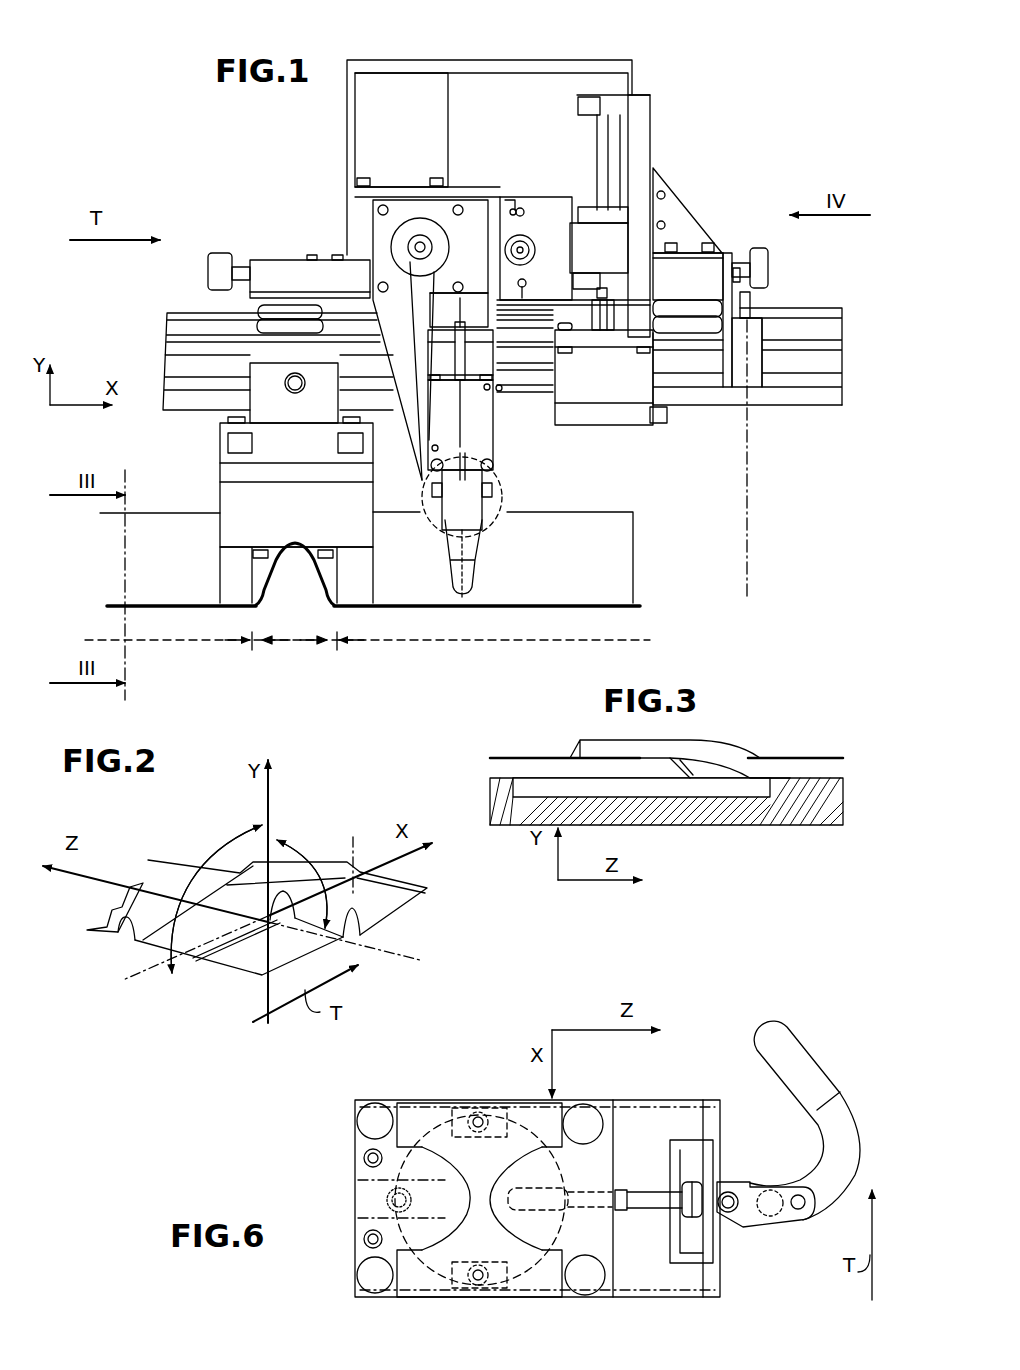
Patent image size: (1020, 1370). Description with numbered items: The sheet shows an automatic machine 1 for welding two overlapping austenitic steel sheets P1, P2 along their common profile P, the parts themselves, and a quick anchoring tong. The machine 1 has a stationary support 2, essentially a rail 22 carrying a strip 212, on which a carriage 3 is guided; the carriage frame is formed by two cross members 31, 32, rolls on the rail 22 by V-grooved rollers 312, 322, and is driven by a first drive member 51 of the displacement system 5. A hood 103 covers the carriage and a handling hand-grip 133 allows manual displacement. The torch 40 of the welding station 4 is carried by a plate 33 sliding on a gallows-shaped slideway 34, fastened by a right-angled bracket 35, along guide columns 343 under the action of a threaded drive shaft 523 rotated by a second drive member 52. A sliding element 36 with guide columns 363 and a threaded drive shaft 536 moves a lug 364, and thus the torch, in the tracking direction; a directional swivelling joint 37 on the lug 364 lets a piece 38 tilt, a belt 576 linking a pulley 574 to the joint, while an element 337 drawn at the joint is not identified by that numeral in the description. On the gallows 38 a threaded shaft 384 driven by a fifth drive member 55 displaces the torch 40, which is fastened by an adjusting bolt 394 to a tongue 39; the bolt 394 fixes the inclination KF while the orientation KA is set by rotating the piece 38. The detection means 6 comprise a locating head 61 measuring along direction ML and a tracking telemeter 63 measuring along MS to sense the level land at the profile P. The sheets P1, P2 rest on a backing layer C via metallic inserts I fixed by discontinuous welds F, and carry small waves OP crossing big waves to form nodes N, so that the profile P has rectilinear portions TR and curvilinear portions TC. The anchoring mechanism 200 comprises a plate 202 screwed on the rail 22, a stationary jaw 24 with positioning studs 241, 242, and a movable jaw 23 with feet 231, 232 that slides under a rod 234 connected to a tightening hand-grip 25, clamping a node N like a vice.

In FIG. 1, the automatic machine 1 is at (244, 184).
In FIG. 1, the stationary support 2 is at (158, 318).
In FIG. 6, the stationary support 2 is at (330, 1168).
In FIG. 1, the carriage 3 is at (688, 72).
In FIG. 1, the welding station 4 is at (798, 508).
In FIG. 1, the displacement system 5 is at (340, 184).
In FIG. 1, the detection means 6 is at (786, 470).
In FIG. 1, the rail 22 is at (185, 368).
In FIG. 6, the movable jaw 23 is at (597, 1163).
In FIG. 1, the stationary jaw 24 is at (236, 520).
In FIG. 6, the stationary jaw 24 is at (365, 1183).
In FIG. 6, the tightening hand-grip 25 is at (797, 1070).
In FIG. 1, the cross member 31 is at (700, 275).
In FIG. 1, the cross member 32 is at (290, 272).
In FIG. 1, the plate 33 is at (590, 237).
In FIG. 1, the slideway with columns 34 is at (645, 130).
In FIG. 1, the right-angled bracket 35 is at (678, 207).
In FIG. 1, the sliding element 36 is at (518, 205).
In FIG. 1, the directional swivelling joint 37 is at (510, 505).
In FIG. 1, the slideway gallows 38 is at (433, 347).
In FIG. 1, the tongue 39 is at (460, 404).
In FIG. 1, the welding torch 40 is at (470, 555).
In FIG. 1, the first drive member 51 is at (420, 105).
In FIG. 1, the second drive member 52 is at (622, 400).
In FIG. 1, the fifth drive member 55 is at (480, 302).
In FIG. 1, the sensing head 61 is at (755, 363).
In FIG. 1, the tracking telemeter 63 is at (483, 457).
In FIG. 1, the hood 103 is at (500, 108).
In FIG. 1, the handling hand-grip 133 is at (250, 292).
In FIG. 1, the anchoring mechanism 200 is at (378, 492).
In FIG. 6, the anchoring mechanism 200 is at (700, 1095).
In FIG. 1, the plate 202 is at (223, 438).
In FIG. 6, the plate 202 is at (663, 1283).
In FIG. 1, the strip 212 is at (812, 317).
In FIG. 6, the cylindrical stud 231 is at (590, 1115).
In FIG. 6, the cylindrical stud 232 is at (563, 1265).
In FIG. 6, the rod 234 is at (645, 1205).
In FIG. 1, the cylindrical positioning stud 241 is at (242, 593).
In FIG. 6, the cylindrical positioning stud 241 is at (367, 1115).
In FIG. 1, the cylindrical positioning stud 242 is at (358, 590).
In FIG. 6, the cylindrical positioning stud 242 is at (370, 1280).
In FIG. 1, the roller 312 is at (708, 400).
In FIG. 1, the roller 322 is at (250, 322).
In FIG. 1, the guide 337 is at (503, 525).
In FIG. 1, the guide steel columns 343 is at (600, 135).
In FIG. 1, the guide columns 363 is at (515, 212).
In FIG. 1, the lug 364 is at (502, 393).
In FIG. 1, the threaded shaft 384 is at (395, 385).
In FIG. 1, the adjusting bolt 394 is at (427, 505).
In FIG. 1, the threaded drive shaft 523 is at (607, 313).
In FIG. 1, the threaded drive shaft 536 is at (540, 205).
In FIG. 1, the pulley 574 is at (423, 245).
In FIG. 1, the toothed belt 576 is at (372, 258).
In FIG. 1, the profile P is at (603, 600).
In FIG. 2, the profile P is at (124, 983).
In FIG. 3, the profile P is at (572, 755).
In FIG. 1, the metal sheet P1 is at (612, 540).
In FIG. 2, the metal sheet P1 is at (403, 880).
In FIG. 3, the metal sheet P1 is at (530, 765).
In FIG. 2, the metal sheet P2 is at (160, 945).
In FIG. 3, the metal sheet P2 is at (800, 765).
In FIG. 1, the small wave OP is at (213, 592).
In FIG. 2, the small wave OP is at (353, 945).
In FIG. 1, the measuring direction ML is at (777, 460).
In FIG. 1, the measuring direction MS is at (482, 440).
In FIG. 1, the rectilinear portion TR is at (197, 645).
In FIG. 1, the curvilinear portion TC is at (292, 645).
In FIG. 2, the orientation angle KA is at (190, 870).
In FIG. 2, the inclination KF is at (310, 875).
In FIG. 2, the node N is at (192, 858).
In FIG. 3, the discontinuous weld F is at (720, 755).
In FIG. 3, the metallic insert I is at (657, 790).
In FIG. 3, the backing layer C is at (812, 798).